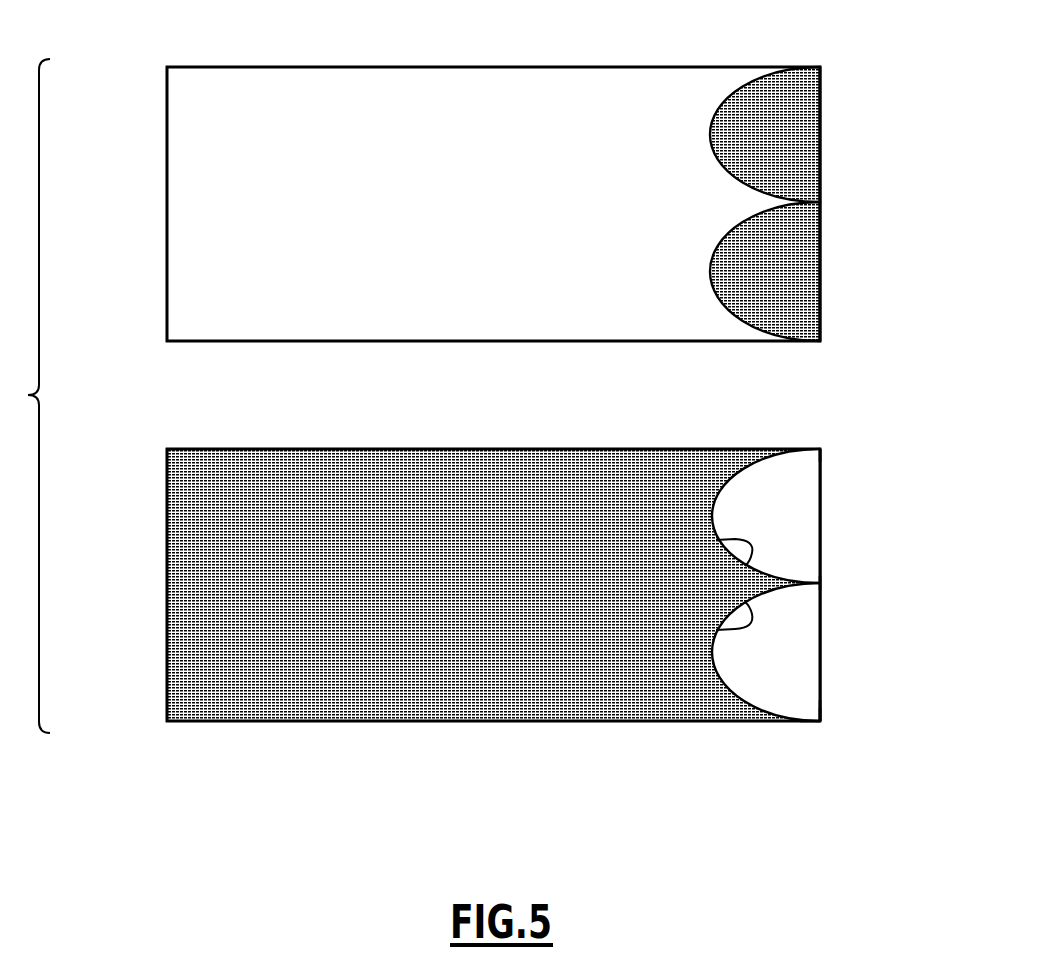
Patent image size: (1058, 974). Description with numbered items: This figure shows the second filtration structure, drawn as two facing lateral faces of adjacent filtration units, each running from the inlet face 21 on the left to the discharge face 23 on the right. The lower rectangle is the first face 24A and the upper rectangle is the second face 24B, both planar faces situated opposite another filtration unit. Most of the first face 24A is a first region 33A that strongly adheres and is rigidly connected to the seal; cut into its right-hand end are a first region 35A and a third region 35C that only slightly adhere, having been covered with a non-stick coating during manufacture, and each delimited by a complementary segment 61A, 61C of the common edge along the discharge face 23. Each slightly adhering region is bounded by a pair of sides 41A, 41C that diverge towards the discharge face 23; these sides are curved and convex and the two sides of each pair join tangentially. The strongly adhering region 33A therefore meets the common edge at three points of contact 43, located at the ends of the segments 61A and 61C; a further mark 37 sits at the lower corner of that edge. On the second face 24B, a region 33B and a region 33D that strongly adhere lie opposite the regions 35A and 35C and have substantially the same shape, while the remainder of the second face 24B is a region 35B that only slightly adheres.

The inlet face 21 is at (158, 189).
The discharge face 23 is at (833, 197).
The first face 24A is at (416, 657).
The second face 24B is at (417, 126).
The first region that strongly adheres 33A is at (436, 475).
The region that strongly adheres 33B is at (805, 270).
The region that strongly adheres 33D is at (805, 146).
The first region that only slightly adheres 35A is at (797, 672).
The region that only slightly adheres 35B is at (543, 90).
The third region that only slightly adheres 35C is at (797, 502).
The corner 37 is at (822, 700).
The pair of sides 41A is at (739, 700).
The pair of sides 41C is at (740, 468).
The points of contact 43 is at (822, 448).
The segment of the common edge 61A is at (822, 636).
The segment of the common edge 61C is at (822, 535).